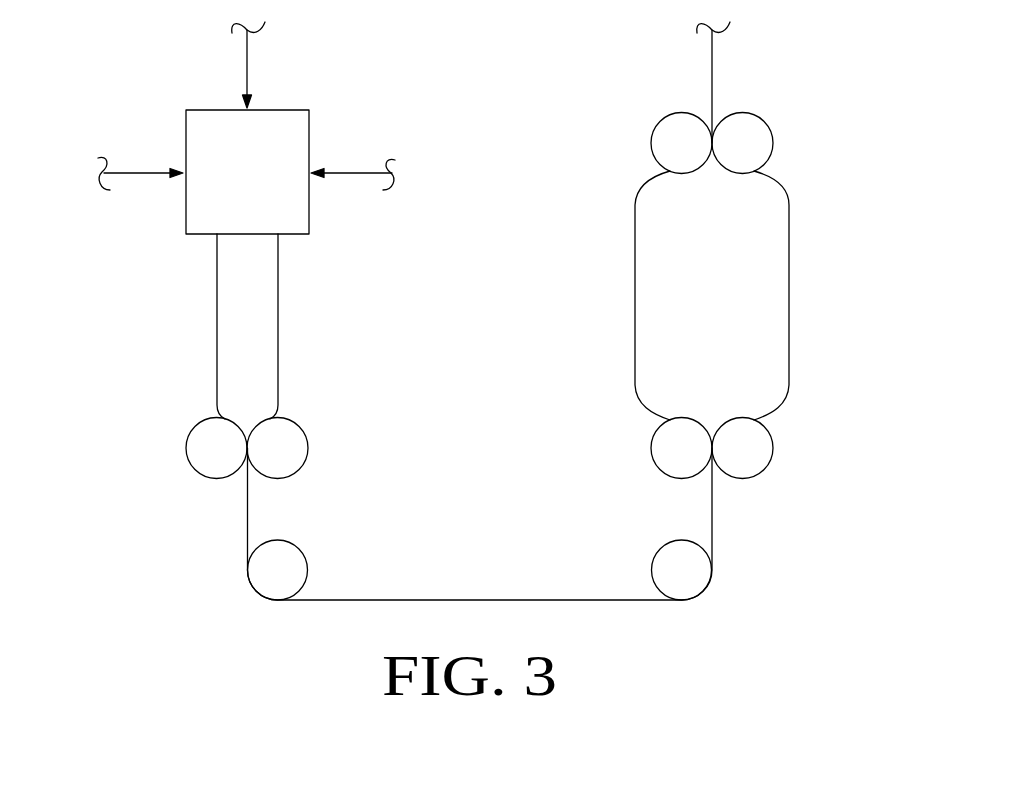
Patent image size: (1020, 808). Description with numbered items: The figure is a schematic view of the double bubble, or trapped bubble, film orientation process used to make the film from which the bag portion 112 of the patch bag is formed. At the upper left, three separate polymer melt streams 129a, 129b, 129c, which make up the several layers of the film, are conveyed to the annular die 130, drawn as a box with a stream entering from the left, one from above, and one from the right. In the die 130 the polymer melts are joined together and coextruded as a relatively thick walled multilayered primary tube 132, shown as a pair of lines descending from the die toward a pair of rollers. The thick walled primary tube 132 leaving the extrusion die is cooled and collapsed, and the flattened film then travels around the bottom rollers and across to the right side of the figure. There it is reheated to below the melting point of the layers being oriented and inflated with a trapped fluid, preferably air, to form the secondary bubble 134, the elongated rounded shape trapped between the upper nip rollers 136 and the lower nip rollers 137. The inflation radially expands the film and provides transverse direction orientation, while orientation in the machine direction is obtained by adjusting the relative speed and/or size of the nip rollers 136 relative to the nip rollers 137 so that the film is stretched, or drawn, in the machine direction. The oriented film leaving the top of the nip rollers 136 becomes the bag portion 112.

The bag portion 112 is at (712, 70).
The melt stream 129a is at (135, 173).
The melt stream 129b is at (248, 57).
The melt stream 129c is at (362, 172).
The annular die 130 is at (310, 210).
The primary tube 132 is at (278, 317).
The secondary bubble 134 is at (789, 250).
The nip rollers 136 is at (650, 138).
The nip rollers 137 is at (650, 456).